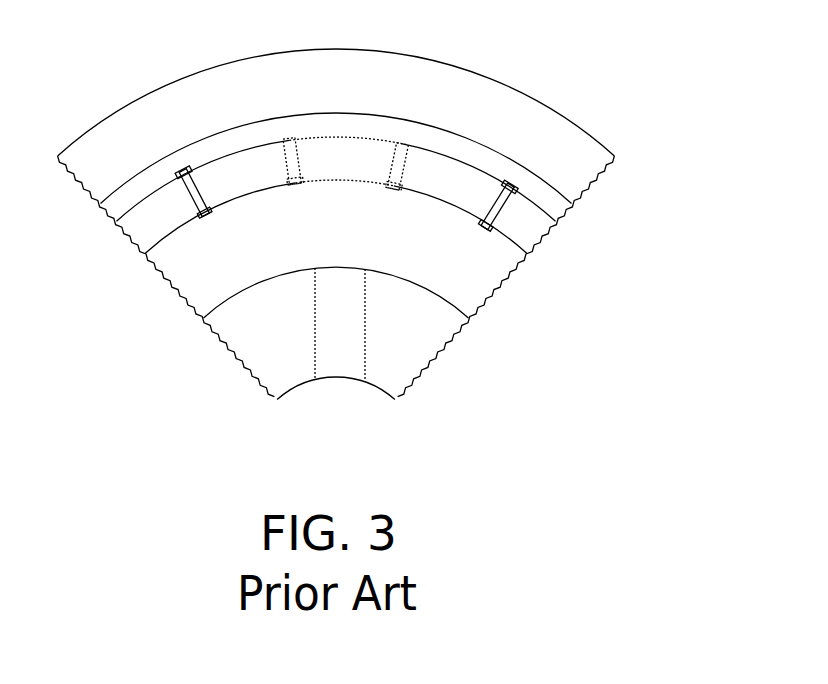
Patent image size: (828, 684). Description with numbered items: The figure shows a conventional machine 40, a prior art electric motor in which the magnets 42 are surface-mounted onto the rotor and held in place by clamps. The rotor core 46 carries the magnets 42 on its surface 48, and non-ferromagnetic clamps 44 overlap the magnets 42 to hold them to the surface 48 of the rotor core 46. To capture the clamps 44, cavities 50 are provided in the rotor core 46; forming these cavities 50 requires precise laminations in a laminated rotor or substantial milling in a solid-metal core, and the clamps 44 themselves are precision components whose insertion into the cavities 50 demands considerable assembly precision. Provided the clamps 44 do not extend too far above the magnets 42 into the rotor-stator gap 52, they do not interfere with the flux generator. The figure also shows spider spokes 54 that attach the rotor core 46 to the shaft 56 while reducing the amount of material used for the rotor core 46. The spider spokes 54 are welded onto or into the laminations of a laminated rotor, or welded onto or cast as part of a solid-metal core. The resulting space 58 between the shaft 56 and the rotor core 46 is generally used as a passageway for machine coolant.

The conventional machine 40 is at (336, 234).
The magnets 42 is at (222, 172).
The non-ferromagnetic clamps 44 is at (296, 135).
The rotor core 46 is at (173, 262).
The surface 48 is at (248, 196).
The cavities 50 is at (203, 216).
The rotor-stator gap 52 is at (350, 125).
The spider spokes 54 is at (360, 330).
The shaft 56 is at (323, 402).
The space 58 is at (245, 328).